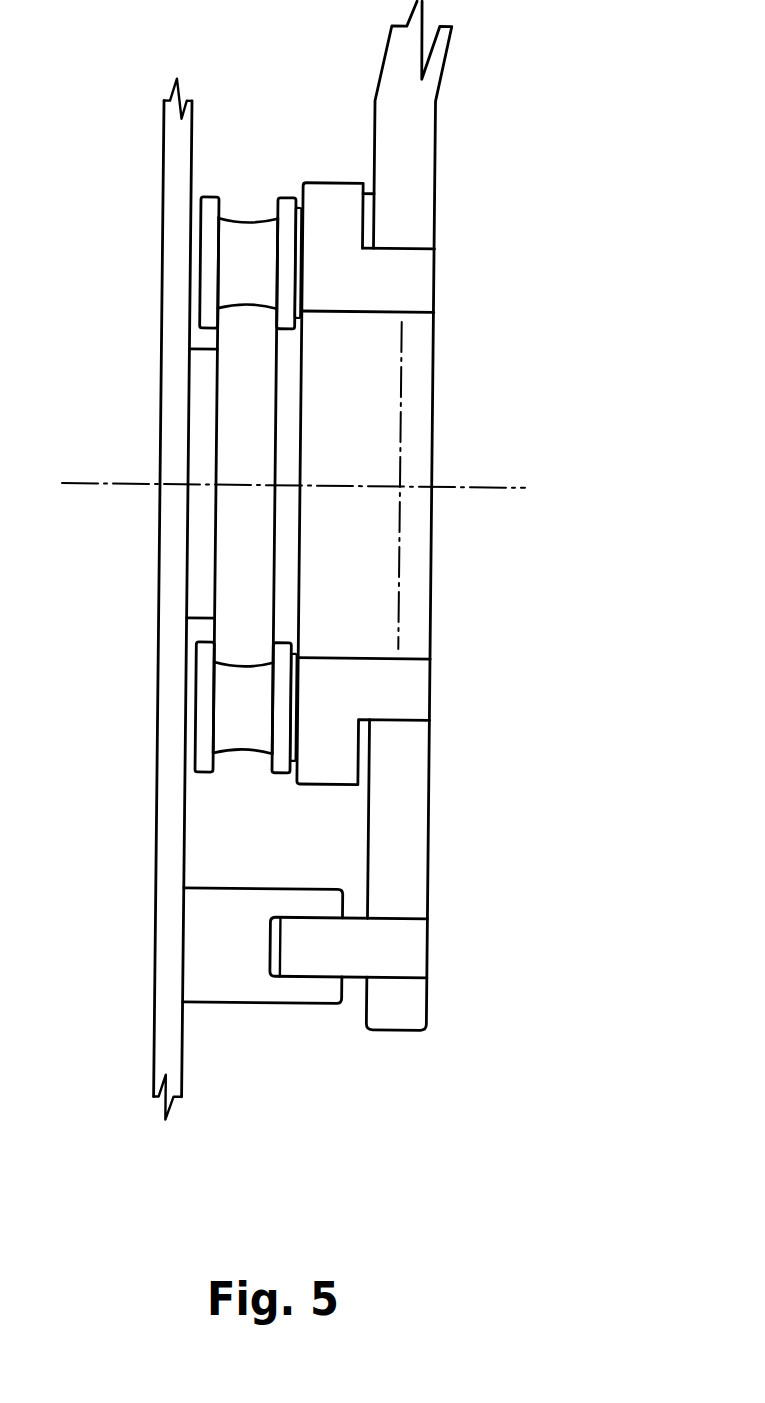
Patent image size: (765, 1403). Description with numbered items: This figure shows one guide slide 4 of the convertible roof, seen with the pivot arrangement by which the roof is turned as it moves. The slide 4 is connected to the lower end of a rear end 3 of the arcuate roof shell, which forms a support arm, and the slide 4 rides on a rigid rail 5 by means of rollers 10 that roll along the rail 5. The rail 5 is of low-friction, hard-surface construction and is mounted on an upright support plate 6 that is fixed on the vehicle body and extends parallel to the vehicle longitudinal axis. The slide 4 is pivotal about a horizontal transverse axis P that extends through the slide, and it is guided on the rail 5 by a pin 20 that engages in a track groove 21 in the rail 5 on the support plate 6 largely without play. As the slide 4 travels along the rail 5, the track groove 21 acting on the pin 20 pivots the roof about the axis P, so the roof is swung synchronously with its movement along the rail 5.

The rear end 3 is at (397, 157).
The guide slide 4 is at (401, 281).
The rail 5 is at (241, 429).
The support plate 6 is at (173, 556).
The roller 10 is at (243, 254).
The pin 20 is at (363, 948).
The track groove 21 is at (248, 979).
The slide axis P is at (406, 479).